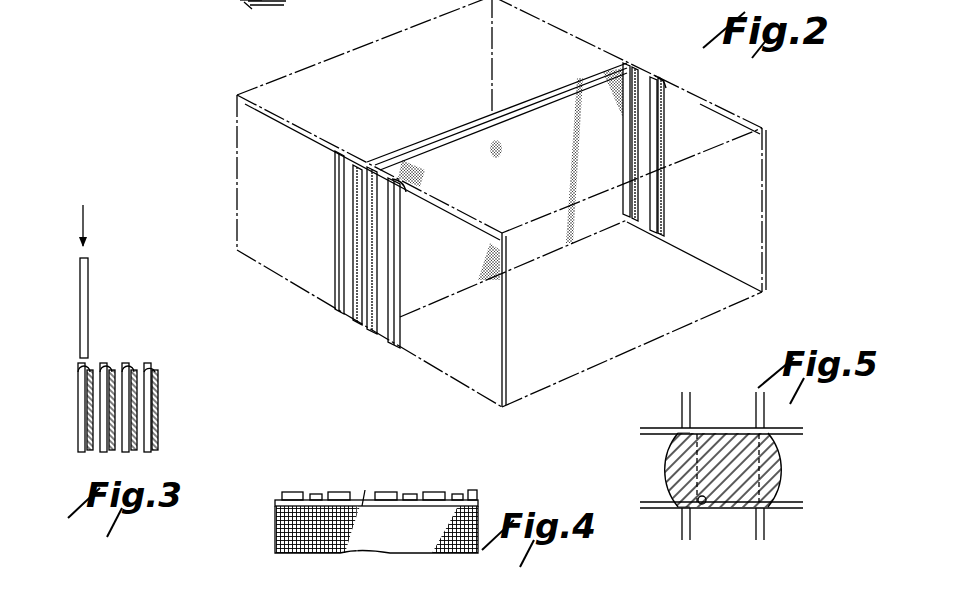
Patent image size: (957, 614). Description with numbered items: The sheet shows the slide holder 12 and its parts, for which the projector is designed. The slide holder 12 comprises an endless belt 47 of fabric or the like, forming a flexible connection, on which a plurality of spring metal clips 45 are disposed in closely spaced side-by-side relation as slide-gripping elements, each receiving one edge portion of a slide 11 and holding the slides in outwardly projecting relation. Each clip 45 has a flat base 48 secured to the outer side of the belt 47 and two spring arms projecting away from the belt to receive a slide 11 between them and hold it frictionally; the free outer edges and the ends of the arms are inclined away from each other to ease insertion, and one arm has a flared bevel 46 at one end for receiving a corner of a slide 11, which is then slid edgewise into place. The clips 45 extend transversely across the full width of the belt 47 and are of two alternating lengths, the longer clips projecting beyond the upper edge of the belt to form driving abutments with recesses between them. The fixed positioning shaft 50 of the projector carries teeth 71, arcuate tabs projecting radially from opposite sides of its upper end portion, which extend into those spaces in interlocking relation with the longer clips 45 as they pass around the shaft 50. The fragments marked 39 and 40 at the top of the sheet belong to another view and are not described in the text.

In FIG. 2, the slide 11 is at (247, 92).
In FIG. 3, the slide 11 is at (89, 292).
In FIG. 4, the slide 11 is at (318, 490).
In FIG. 2, the slide holder 12 is at (627, 61).
In FIG. 2, the upper figure element 39 is at (223, 6).
In FIG. 2, the upper figure element 40 is at (252, 14).
In FIG. 2, the clip 45 is at (354, 149).
In FIG. 3, the clip 45 is at (117, 457).
In FIG. 5, the clip 45 is at (679, 400).
In FIG. 2, the flared bevel 46 is at (400, 183).
In FIG. 2, the endless belt 47 is at (503, 144).
In FIG. 4, the endless belt 47 is at (357, 512).
In FIG. 5, the endless belt 47 is at (704, 504).
In FIG. 5, the flat base 48 is at (737, 405).
In FIG. 5, the shaft 50 is at (757, 483).
In FIG. 5, the teeth 71 is at (667, 455).